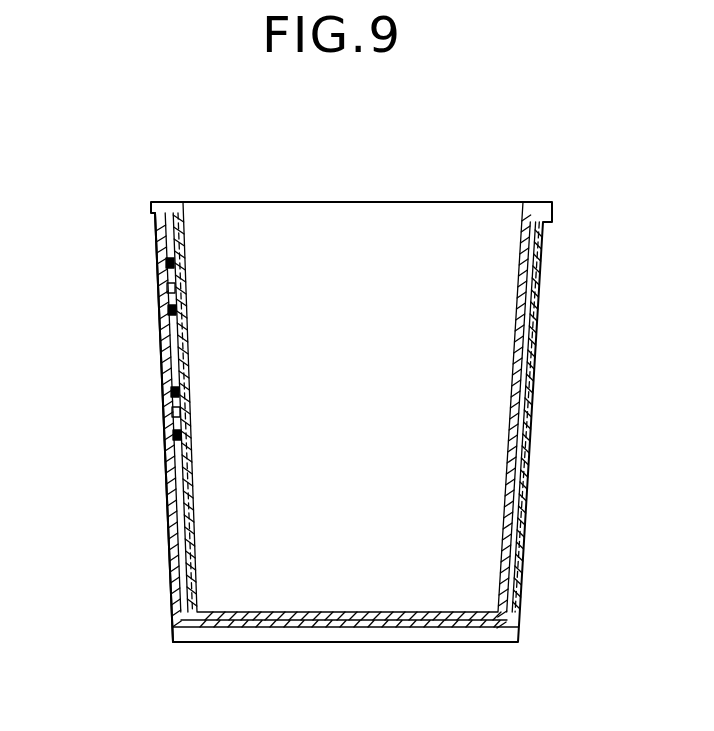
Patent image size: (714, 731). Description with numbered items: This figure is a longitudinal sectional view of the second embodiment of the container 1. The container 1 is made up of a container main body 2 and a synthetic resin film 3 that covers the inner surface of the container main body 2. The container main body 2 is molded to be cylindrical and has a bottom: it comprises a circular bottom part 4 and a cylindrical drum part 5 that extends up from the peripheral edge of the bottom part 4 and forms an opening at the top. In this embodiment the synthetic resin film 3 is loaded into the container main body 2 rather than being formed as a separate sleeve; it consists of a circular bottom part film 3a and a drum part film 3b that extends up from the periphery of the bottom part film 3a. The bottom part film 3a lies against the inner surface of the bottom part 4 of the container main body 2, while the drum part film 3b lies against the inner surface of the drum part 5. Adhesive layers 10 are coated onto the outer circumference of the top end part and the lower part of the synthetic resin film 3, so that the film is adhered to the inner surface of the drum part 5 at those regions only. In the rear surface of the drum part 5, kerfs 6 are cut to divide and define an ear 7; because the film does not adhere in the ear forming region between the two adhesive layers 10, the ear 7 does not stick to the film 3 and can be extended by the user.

The container 1 is at (151, 211).
The container main body 2 is at (168, 528).
The synthetic resin film 3 is at (183, 294).
The bottom part film 3a is at (348, 611).
The drum part film 3b is at (188, 397).
The bottom part 4 is at (322, 624).
The drum part 5 is at (168, 490).
The kerfs 6 is at (162, 263).
The ear 7 is at (163, 288).
The adhesive layers 10 is at (155, 237).